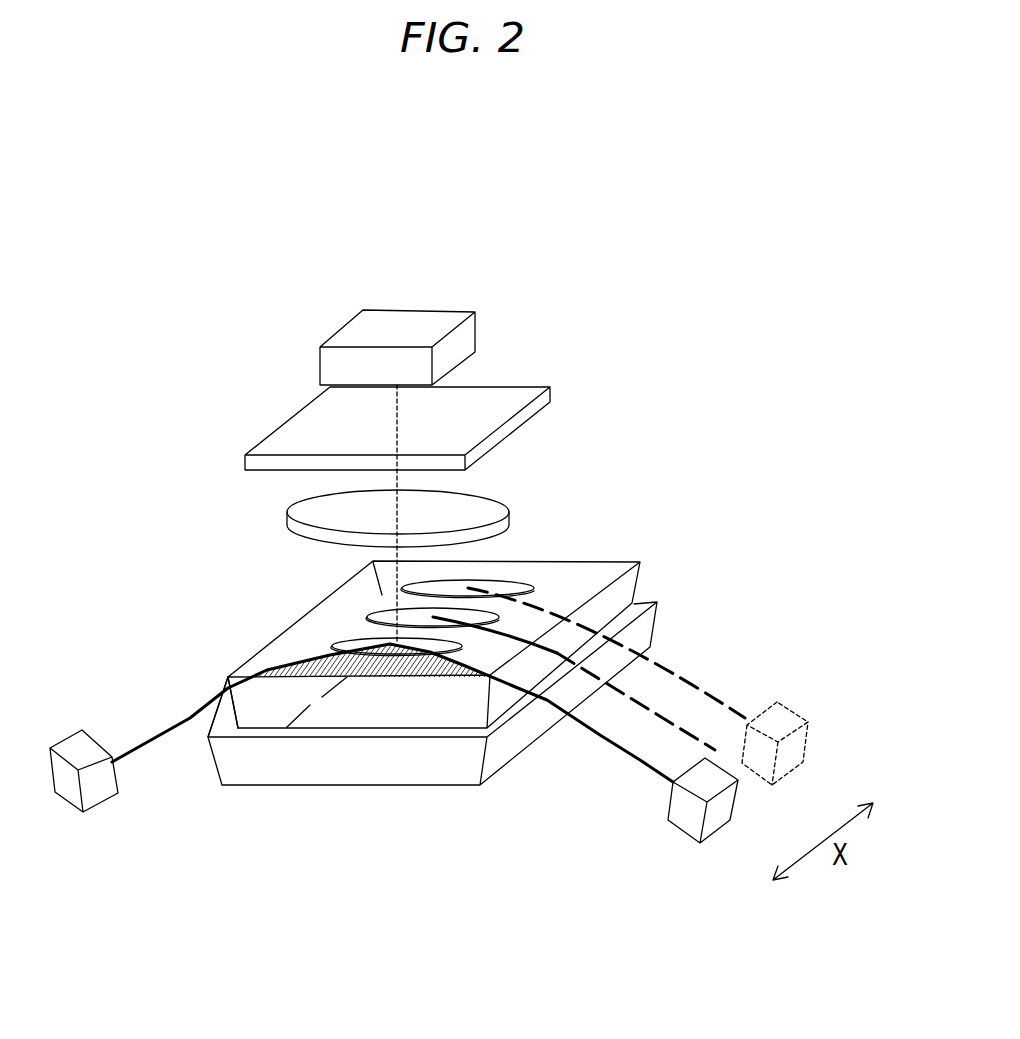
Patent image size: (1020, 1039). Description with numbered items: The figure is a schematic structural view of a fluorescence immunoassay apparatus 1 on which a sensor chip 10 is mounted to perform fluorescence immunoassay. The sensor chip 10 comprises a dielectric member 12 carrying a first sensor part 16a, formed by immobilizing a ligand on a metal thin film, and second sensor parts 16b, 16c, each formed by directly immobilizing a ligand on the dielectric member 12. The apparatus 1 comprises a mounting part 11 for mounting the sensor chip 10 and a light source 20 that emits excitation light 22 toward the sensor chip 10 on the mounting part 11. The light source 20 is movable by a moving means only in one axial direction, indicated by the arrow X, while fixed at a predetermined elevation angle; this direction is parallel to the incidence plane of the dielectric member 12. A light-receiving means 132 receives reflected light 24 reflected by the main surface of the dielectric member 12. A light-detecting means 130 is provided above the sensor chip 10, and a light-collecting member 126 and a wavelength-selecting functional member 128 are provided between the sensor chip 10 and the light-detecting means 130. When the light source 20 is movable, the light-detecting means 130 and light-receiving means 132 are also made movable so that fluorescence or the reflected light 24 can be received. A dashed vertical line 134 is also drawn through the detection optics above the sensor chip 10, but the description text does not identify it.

The fluorescence immunoassay apparatus 1 is at (652, 292).
The sensor chip 10 is at (213, 653).
The mounting part 11 is at (327, 763).
The dielectric member 12 is at (445, 705).
The first sensor part 16a is at (367, 637).
The second sensor part 16b is at (463, 618).
The second sensor part 16c is at (458, 585).
The light source 20 is at (690, 805).
The excitation light 22 is at (590, 737).
The reflected light 24 is at (208, 737).
The light-collecting member 126 is at (327, 515).
The wavelength-selecting functional member 128 is at (318, 430).
The light-detecting means 130 is at (370, 330).
The light-receiving means 132 is at (93, 790).
The optical axis 134 is at (400, 432).